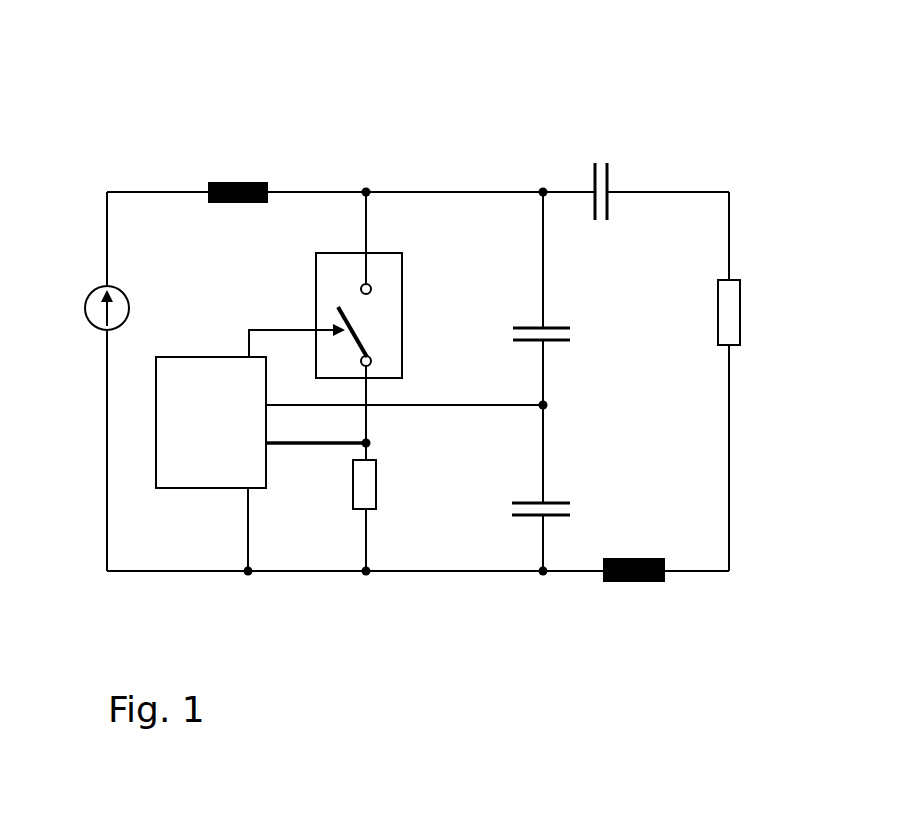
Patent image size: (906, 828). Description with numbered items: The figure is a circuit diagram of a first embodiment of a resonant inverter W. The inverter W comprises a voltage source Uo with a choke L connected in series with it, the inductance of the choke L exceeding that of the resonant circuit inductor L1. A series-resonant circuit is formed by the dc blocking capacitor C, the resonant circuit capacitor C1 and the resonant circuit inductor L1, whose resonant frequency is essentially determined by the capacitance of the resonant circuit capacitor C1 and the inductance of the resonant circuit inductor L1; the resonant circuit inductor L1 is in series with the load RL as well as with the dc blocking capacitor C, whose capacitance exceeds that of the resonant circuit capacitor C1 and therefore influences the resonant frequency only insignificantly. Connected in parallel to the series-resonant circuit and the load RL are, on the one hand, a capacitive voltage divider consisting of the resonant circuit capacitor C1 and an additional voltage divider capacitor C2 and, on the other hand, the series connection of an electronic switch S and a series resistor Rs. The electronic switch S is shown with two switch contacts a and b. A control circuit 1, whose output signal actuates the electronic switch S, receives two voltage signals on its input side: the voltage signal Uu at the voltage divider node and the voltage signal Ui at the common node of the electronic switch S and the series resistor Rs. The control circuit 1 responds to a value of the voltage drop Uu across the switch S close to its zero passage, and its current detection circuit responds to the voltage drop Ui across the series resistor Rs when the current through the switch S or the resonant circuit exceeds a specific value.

The control circuit 1 is at (208, 357).
The resonant inverter W is at (388, 120).
The electronic switch S is at (438, 223).
The switch contact a is at (377, 291).
The switch contact b is at (377, 360).
The choke L is at (238, 173).
The resonant circuit inductor L1 is at (634, 545).
The dc blocking capacitor C is at (626, 186).
The resonant circuit capacitor C1 is at (555, 304).
The voltage divider capacitor C2 is at (554, 483).
The load RL is at (760, 336).
The series resistor Rs is at (385, 508).
The voltage source Uo is at (78, 340).
The voltage signal at the voltage divider node Uu is at (404, 386).
The voltage signal at the common node of the switch and series resistor Ui is at (338, 442).